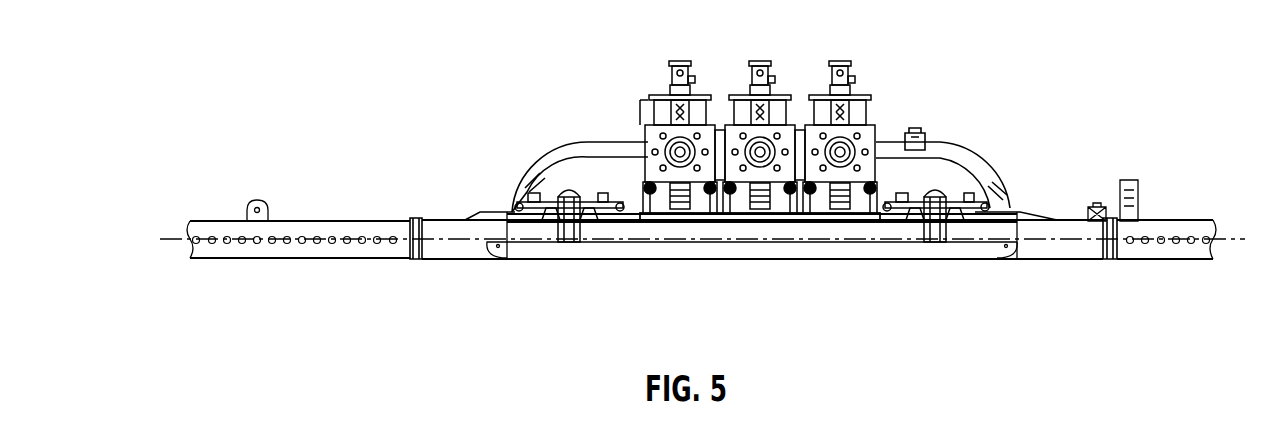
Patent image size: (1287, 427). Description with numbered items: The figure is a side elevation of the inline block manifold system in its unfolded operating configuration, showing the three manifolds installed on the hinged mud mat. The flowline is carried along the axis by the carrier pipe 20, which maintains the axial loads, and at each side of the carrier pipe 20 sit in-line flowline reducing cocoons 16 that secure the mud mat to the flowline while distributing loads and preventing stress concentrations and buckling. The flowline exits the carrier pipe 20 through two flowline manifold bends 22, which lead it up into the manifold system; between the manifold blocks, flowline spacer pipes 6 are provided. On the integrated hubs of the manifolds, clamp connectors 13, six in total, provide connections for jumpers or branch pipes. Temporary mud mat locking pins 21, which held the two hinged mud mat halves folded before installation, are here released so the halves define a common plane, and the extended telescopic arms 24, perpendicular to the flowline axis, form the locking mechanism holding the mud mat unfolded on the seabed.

The flowline spacer pipe 6 is at (760, 164).
The clamp connector 13 is at (654, 101).
The flowline reducing cocoon 16 is at (310, 226).
The carrier pipe 20 is at (458, 250).
The temporary mud mat locking pin 21 is at (512, 213).
The flowline manifold bend 22 is at (557, 152).
The telescopic arm 24 is at (676, 188).